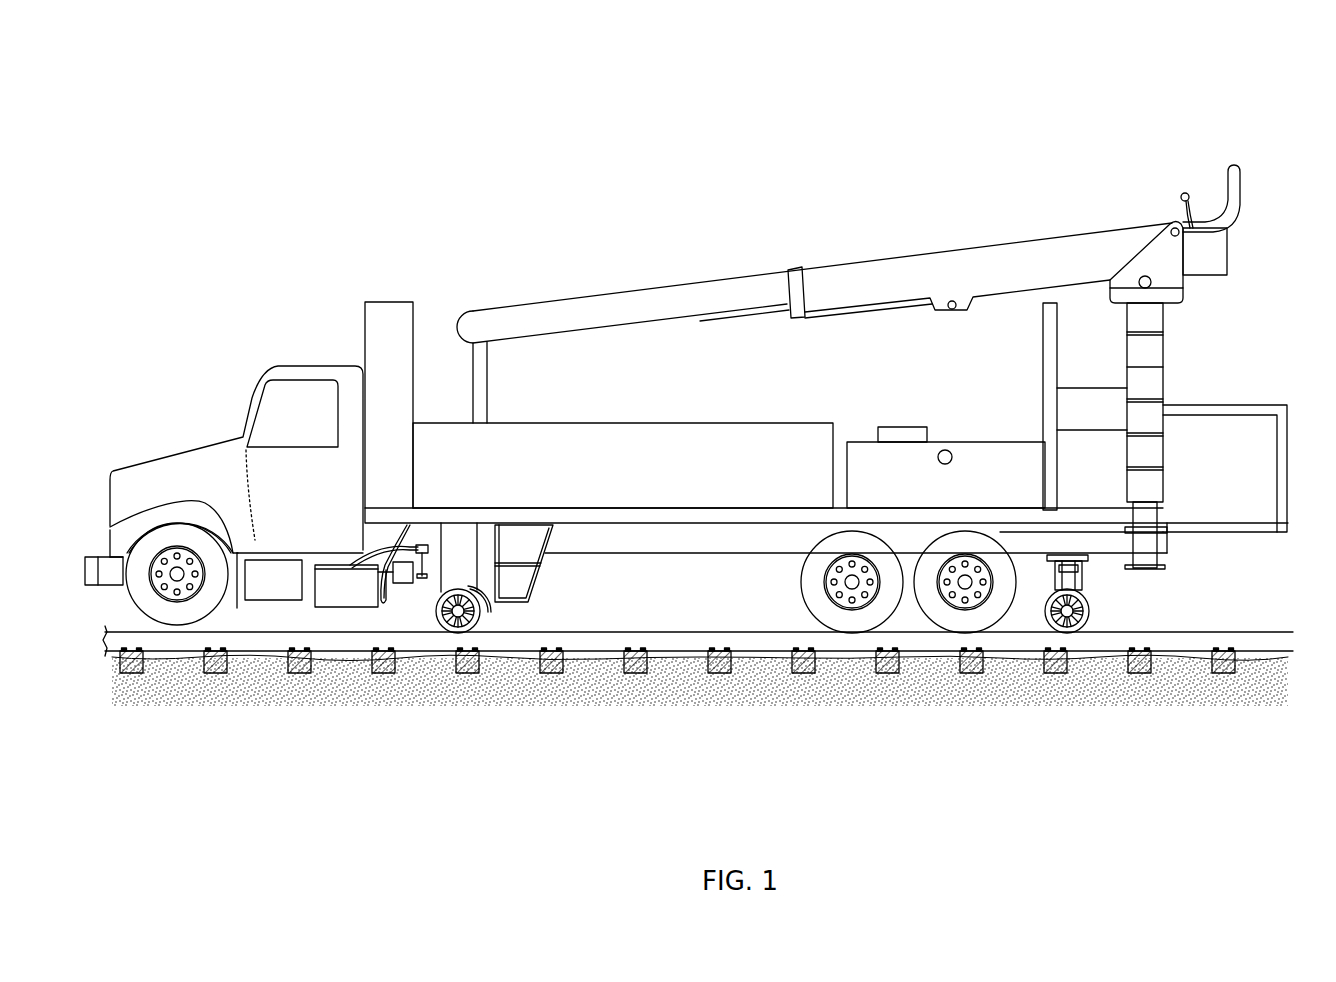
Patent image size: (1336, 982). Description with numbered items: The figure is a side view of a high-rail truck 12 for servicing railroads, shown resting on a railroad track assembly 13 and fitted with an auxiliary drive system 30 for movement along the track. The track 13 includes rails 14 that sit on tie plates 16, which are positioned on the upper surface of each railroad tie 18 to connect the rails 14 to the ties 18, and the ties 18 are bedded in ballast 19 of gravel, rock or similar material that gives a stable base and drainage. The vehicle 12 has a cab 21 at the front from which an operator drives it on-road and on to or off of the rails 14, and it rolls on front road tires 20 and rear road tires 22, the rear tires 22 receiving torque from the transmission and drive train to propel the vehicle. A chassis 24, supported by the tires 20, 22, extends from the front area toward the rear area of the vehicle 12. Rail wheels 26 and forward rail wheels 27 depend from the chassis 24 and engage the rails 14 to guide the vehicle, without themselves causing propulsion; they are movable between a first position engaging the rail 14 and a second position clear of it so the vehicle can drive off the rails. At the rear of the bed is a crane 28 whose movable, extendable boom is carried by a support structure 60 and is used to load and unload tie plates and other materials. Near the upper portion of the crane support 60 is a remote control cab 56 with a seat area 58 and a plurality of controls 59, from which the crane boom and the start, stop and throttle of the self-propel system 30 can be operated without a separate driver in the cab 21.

The high-rail truck 12 is at (920, 105).
The railroad track assembly 13 is at (1282, 604).
The rails 14 is at (1278, 642).
The tie plates 16 is at (636, 648).
The railroad ties 18 is at (887, 673).
The ballast 19 is at (1262, 679).
The front road tires 20 is at (173, 613).
The cab 21 is at (217, 393).
The rear road tires 22 is at (880, 612).
The chassis 24 is at (790, 530).
The rail wheels 26 is at (1092, 612).
The forward rail wheels 27 is at (437, 608).
The crane 28 is at (705, 292).
The auxiliary drive system 30 is at (307, 215).
The remote control cab 56 is at (1200, 162).
The seat area 58 is at (1233, 188).
The controls 59 is at (1170, 197).
The crane support structure 60 is at (1187, 357).